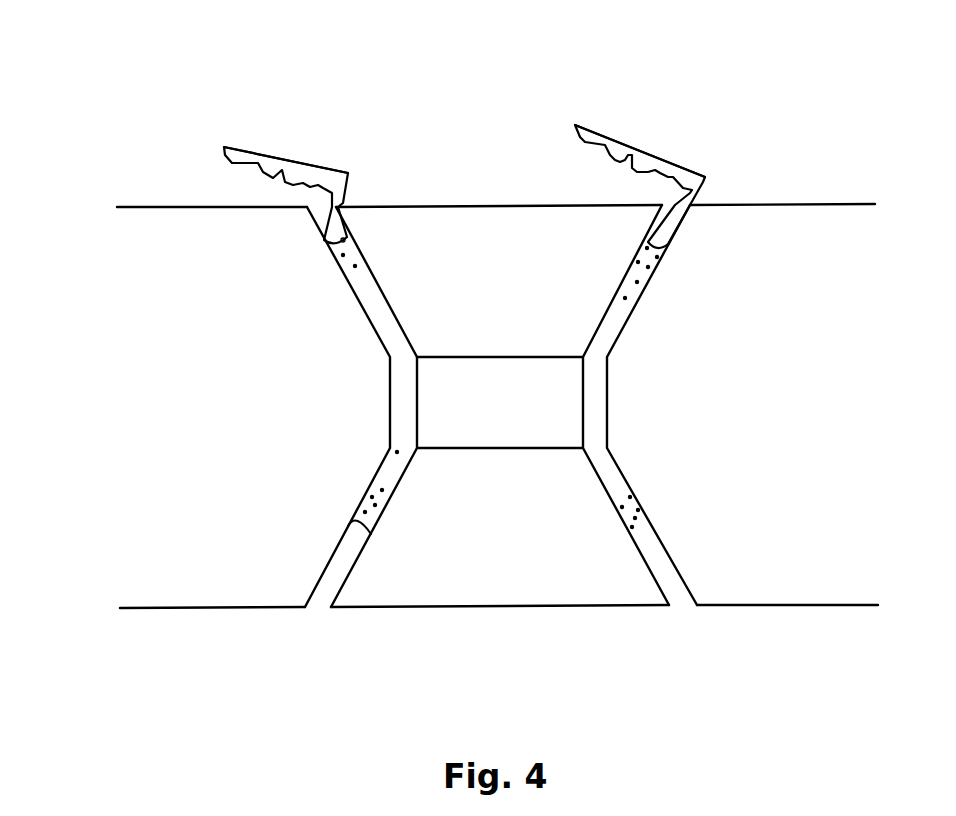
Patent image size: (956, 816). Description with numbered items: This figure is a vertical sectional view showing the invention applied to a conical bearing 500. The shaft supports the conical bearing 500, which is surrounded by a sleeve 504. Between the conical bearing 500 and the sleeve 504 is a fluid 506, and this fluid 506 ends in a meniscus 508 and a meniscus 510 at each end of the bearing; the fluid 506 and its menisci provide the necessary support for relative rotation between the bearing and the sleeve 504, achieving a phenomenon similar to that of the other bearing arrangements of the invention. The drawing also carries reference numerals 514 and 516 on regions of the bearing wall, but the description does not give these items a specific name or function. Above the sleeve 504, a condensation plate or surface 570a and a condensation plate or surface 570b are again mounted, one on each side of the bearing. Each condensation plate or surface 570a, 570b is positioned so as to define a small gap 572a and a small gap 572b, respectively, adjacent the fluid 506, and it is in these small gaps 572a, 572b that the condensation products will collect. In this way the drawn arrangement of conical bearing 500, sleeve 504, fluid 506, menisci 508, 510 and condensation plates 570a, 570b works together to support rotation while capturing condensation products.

The conical bearing 500 is at (572, 36).
The sleeve 504 is at (790, 412).
The fluid 506 is at (642, 505).
The meniscus 508 is at (640, 560).
The meniscus 510 is at (390, 383).
The upper left wall region 514 is at (324, 240).
The lower left wall region 516 is at (348, 524).
The condensation plate or surface 570a is at (642, 152).
The condensation plate or surface 570b is at (253, 150).
The small gap 572a is at (655, 195).
The small gap 572b is at (226, 194).